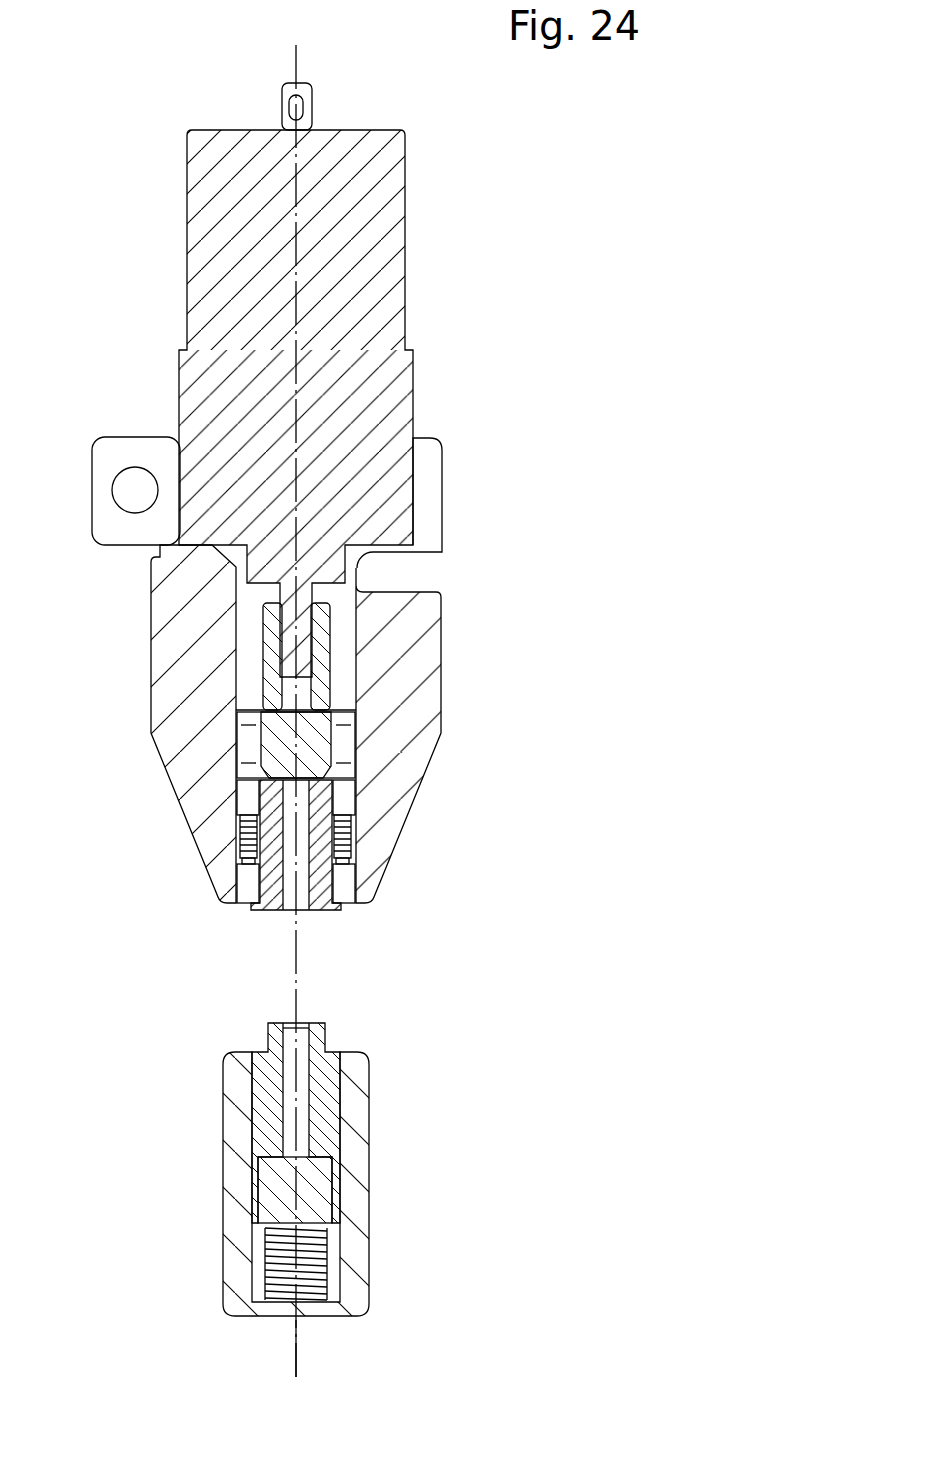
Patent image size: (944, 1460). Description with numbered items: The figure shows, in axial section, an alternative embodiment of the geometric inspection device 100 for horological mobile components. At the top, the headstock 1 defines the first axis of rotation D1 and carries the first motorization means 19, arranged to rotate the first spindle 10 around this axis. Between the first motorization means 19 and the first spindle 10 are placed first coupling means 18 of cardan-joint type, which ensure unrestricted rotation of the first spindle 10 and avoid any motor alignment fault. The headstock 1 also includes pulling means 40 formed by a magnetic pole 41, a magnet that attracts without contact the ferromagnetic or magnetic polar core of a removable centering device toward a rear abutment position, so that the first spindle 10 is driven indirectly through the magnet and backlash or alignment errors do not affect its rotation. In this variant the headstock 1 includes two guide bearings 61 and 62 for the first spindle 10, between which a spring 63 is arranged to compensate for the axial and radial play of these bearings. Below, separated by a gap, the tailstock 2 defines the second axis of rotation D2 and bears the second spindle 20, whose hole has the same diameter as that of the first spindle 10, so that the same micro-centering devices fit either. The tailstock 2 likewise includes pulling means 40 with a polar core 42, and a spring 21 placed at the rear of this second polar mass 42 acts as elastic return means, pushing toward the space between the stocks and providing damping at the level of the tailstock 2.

The geometric inspection device 100 is at (388, 977).
The first motorization means 19 is at (205, 420).
The headstock 1 is at (183, 715).
The first coupling means 18 is at (260, 618).
The magnetic pole 41 is at (270, 738).
The pulling means 40 is at (310, 748).
The guide bearing 62 is at (245, 792).
The spring 63 is at (248, 825).
The guide bearing 61 is at (220, 893).
The first spindle 10 is at (270, 878).
The tailstock 2 is at (233, 1307).
The second spindle 20 is at (268, 1112).
The polar core 42 is at (277, 1187).
The spring 21 is at (265, 1272).
The first axis of rotation D1 is at (297, 312).
The second axis of rotation D2 is at (297, 1363).